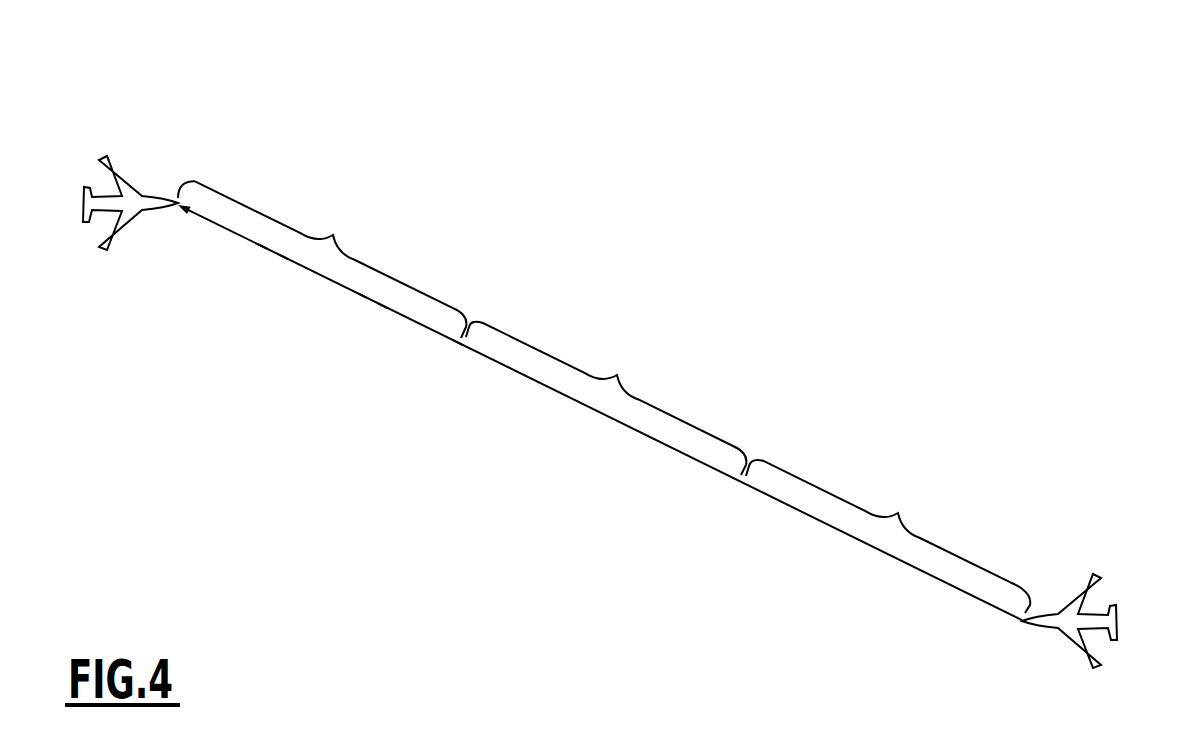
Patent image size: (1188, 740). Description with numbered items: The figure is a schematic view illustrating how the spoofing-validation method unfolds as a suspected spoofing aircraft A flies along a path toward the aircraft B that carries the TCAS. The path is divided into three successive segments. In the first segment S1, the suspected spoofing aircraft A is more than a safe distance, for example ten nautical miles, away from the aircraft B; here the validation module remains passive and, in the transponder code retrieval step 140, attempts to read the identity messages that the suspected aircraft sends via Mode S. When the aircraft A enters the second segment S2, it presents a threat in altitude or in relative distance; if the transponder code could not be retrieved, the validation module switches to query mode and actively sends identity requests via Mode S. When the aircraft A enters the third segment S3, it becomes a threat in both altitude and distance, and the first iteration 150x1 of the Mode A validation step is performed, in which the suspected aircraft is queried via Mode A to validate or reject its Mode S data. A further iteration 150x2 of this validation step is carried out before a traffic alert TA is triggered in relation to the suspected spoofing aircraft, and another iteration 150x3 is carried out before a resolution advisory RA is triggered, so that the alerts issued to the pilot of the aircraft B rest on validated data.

The aircraft carrying the TCAS B is at (80, 150).
The suspected spoofing aircraft A is at (1113, 565).
The resolution advisory RA is at (263, 236).
The traffic alert TA is at (363, 285).
The third segment S3 is at (330, 259).
The second segment S2 is at (606, 398).
The first segment S1 is at (878, 521).
The third iteration of the Mode A validation step 150x3 is at (283, 267).
The second iteration of the Mode A validation step 150x2 is at (383, 316).
The first iteration of the Mode A validation step 150x1 is at (458, 353).
The transponder code retrieval step 140 is at (604, 406).